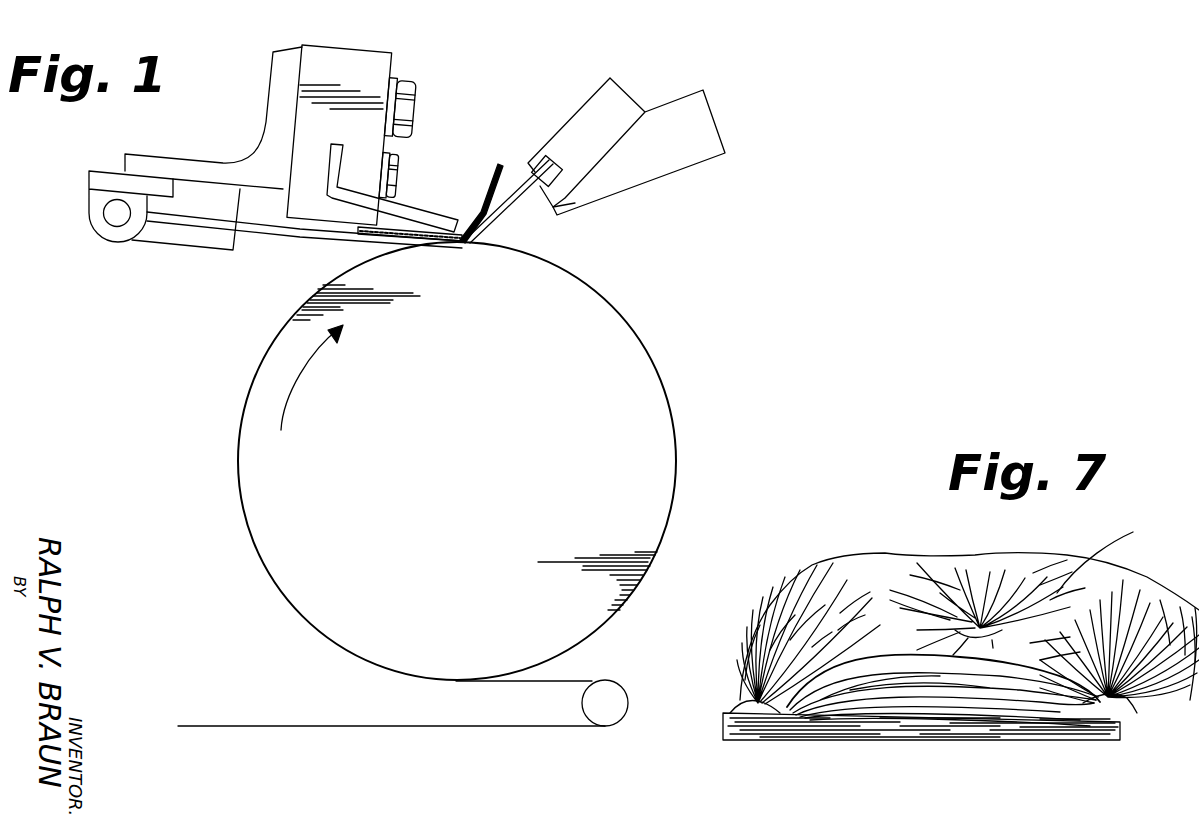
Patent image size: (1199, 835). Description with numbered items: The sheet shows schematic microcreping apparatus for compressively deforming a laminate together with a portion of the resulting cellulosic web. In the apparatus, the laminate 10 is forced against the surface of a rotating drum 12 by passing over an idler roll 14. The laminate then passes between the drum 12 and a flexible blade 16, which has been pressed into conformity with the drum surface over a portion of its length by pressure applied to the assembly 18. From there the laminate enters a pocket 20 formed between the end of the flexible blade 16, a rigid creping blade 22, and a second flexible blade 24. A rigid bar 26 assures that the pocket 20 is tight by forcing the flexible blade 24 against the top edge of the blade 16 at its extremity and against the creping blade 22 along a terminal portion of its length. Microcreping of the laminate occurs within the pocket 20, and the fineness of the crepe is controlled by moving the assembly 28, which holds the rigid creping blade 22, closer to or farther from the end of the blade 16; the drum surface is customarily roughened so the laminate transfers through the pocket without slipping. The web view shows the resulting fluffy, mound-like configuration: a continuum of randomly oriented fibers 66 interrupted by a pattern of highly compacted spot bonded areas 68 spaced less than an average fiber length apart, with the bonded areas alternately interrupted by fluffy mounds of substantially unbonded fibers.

In FIG. 1, the laminate 10 is at (288, 691).
In FIG. 1, the rotating drum 12 is at (652, 384).
In FIG. 1, the idler roll 14 is at (609, 695).
In FIG. 1, the flexible blade 16 is at (280, 232).
In FIG. 1, the assembly 18 is at (272, 100).
In FIG. 1, the pocket 20 is at (467, 246).
In FIG. 1, the rigid creping blade 22 is at (484, 214).
In FIG. 1, the flexible blade 24 is at (449, 203).
In FIG. 1, the rigid bar 26 is at (418, 232).
In FIG. 1, the assembly 28 is at (620, 102).
In FIG. 7, the randomly oriented fibers 66 is at (1130, 630).
In FIG. 7, the spot bonded areas 68 is at (1000, 610).